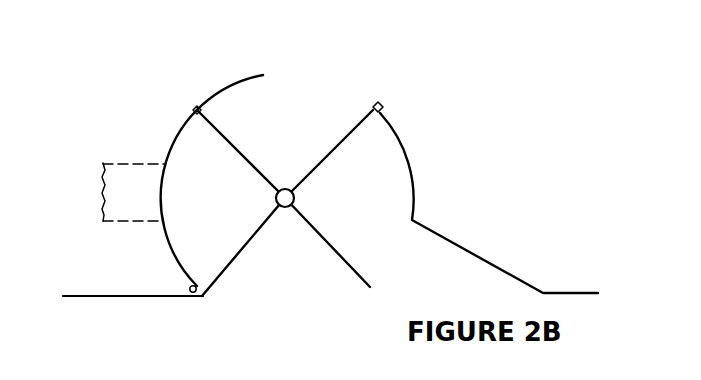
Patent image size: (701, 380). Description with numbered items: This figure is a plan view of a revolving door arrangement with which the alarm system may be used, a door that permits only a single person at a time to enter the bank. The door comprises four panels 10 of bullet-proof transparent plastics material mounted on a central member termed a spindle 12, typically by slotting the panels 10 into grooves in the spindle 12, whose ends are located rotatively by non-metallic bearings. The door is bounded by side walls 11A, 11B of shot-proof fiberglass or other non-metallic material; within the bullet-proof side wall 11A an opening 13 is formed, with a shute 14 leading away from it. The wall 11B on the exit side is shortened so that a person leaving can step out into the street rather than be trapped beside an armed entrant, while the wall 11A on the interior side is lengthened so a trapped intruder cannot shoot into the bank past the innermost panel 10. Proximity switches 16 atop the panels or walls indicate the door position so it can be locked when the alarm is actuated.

The panels 10 is at (350, 131).
The side wall 11A is at (183, 128).
The side wall 11B is at (408, 153).
The spindle 12 is at (305, 202).
The opening 13 is at (165, 177).
The shute 14 is at (114, 174).
The proximity switches 16 is at (196, 106).